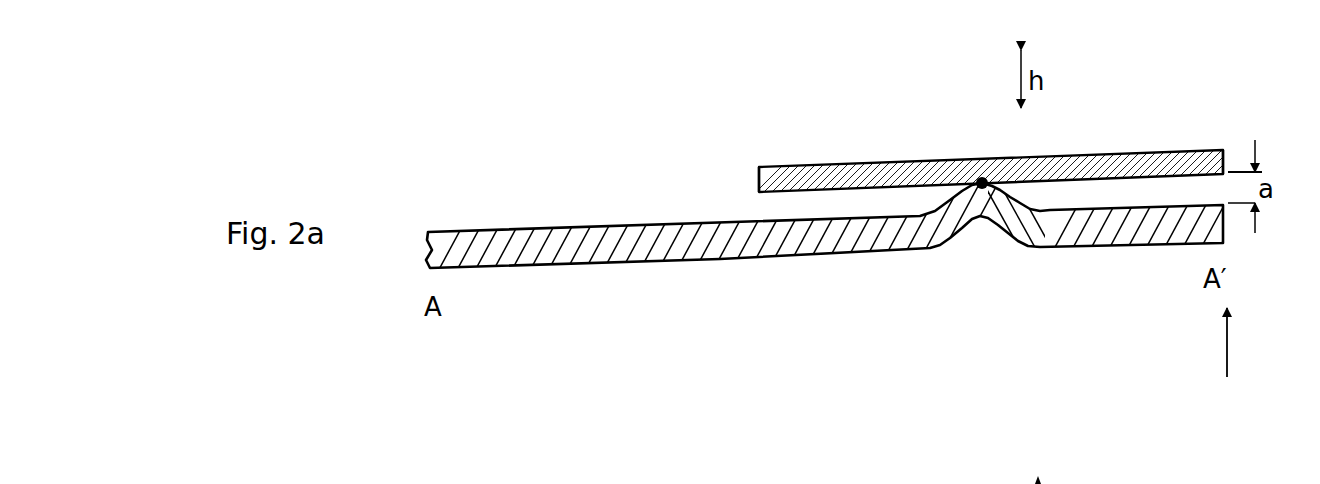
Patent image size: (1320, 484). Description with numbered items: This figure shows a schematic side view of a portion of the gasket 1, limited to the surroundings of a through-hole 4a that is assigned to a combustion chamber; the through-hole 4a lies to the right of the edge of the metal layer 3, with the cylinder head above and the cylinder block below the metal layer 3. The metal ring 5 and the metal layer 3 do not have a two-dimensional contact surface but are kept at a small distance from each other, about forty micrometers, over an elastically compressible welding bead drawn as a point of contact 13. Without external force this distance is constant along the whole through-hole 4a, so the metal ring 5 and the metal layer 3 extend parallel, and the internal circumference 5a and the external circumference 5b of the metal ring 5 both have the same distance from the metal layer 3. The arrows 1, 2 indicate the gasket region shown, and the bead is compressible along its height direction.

The gasket 1 is at (578, 163).
The micromechanical structure 2 is at (632, 160).
The metal layer 3 is at (657, 250).
The through-hole 4a is at (1245, 342).
The metal ring 5 is at (903, 177).
The internal circumference 5a is at (1225, 152).
The external circumference 5b is at (758, 186).
The contact point 13 is at (978, 213).